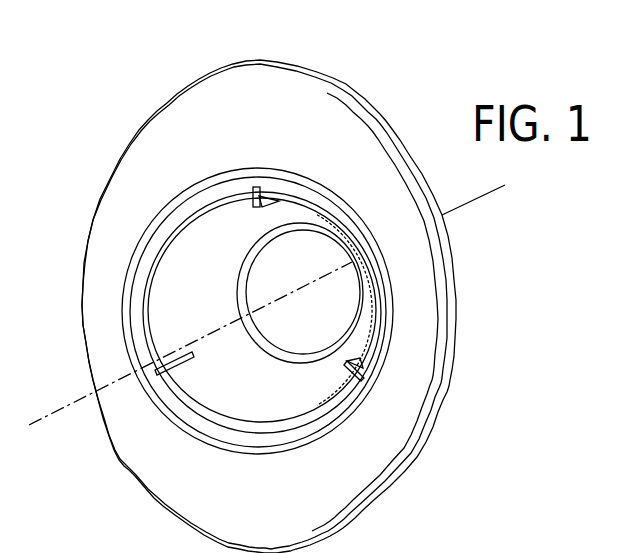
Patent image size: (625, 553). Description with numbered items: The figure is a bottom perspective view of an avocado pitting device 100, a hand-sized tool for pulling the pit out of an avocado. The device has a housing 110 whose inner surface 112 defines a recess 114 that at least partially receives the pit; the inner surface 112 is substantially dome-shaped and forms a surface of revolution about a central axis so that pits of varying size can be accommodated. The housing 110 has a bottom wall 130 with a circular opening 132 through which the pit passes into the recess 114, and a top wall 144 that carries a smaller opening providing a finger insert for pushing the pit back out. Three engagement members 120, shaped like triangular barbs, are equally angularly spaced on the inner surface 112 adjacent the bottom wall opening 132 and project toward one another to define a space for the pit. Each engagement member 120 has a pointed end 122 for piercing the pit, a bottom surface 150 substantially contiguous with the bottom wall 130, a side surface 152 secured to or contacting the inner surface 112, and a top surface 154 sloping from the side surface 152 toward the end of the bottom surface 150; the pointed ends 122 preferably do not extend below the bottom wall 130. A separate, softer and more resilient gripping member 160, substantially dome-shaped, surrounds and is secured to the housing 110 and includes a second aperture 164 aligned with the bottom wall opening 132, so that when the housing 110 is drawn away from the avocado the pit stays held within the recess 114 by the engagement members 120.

The avocado pitting device 100 is at (127, 107).
The housing 110 is at (242, 403).
The inner surface 112 is at (208, 222).
The recess 114 is at (275, 397).
The engagement member 120 is at (256, 212).
The pointed end 122 is at (323, 413).
The bottom wall 130 is at (160, 240).
The opening 132 is at (143, 307).
The top wall 144 is at (256, 334).
The bottom surface 150 is at (246, 198).
The side surface 152 is at (266, 193).
The top surface 154 is at (277, 207).
The gripping member 160 is at (200, 107).
The second aperture 164 is at (216, 452).